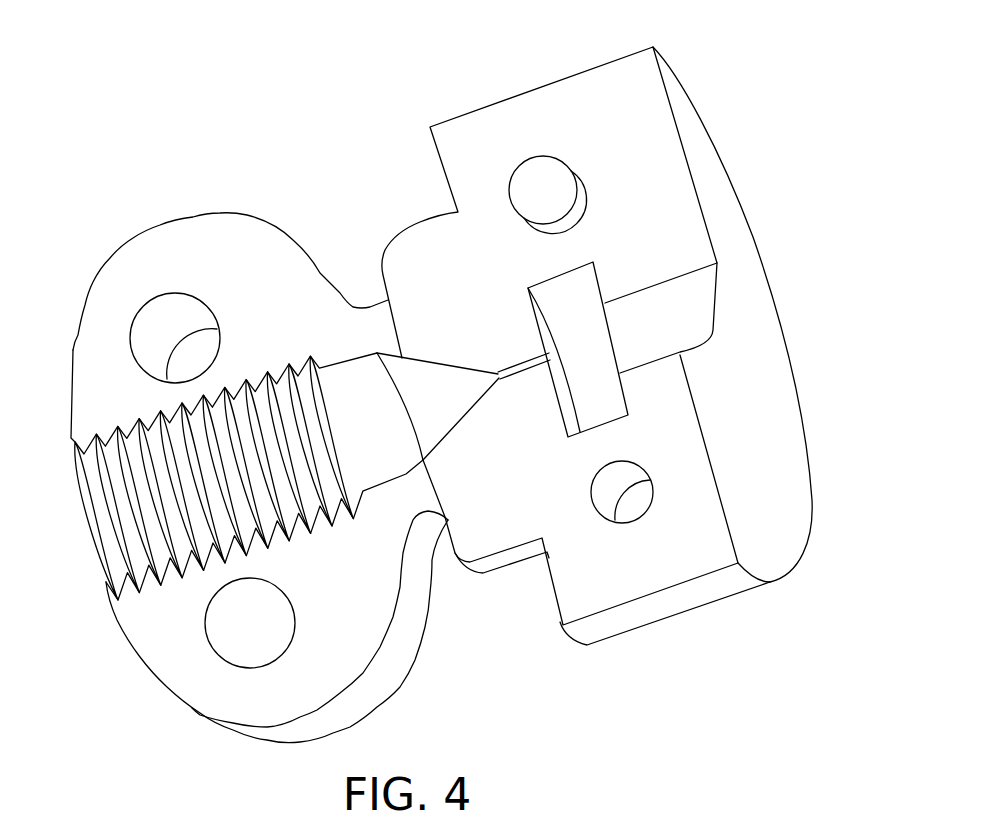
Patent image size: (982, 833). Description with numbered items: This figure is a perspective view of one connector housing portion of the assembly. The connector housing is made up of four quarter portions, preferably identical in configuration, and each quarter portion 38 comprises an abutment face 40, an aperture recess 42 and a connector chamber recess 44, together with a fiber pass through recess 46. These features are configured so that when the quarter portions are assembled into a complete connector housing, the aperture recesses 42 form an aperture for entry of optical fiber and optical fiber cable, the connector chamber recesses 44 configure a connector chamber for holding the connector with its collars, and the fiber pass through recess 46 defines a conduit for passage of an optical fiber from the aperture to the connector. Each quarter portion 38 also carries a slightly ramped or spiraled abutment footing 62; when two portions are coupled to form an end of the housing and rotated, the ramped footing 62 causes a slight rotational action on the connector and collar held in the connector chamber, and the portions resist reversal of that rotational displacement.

The quarter portion 38 is at (505, 74).
The abutment face 40 is at (673, 153).
The aperture recess 42 is at (95, 515).
The connector chamber recess 44 is at (623, 340).
The fiber pass through recess 46 is at (522, 380).
The abutment footing 62 is at (770, 293).